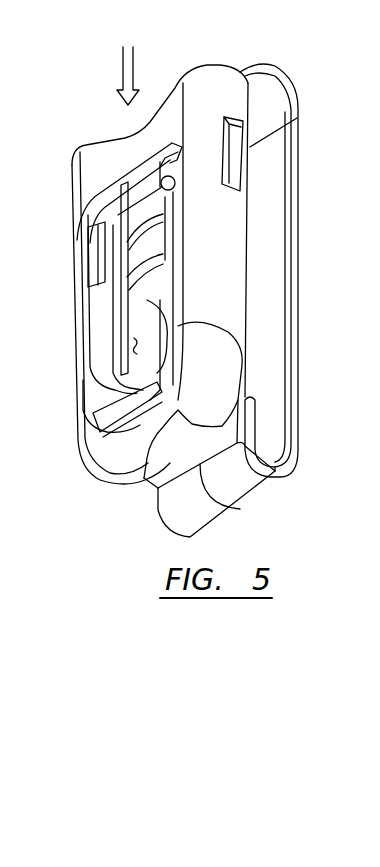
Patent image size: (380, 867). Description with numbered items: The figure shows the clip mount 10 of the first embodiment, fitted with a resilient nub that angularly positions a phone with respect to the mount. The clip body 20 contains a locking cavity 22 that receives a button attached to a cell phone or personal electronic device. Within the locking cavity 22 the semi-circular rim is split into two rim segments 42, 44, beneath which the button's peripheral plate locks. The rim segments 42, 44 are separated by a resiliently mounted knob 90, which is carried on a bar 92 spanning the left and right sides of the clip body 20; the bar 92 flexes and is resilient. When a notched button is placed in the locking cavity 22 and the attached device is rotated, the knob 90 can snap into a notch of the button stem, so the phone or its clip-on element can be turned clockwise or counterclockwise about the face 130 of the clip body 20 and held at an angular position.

The clip mount 10 is at (310, 302).
The rim segment 42 is at (150, 314).
The face 130 is at (92, 160).
The clip body 20 is at (78, 292).
The locking cavity 22 is at (128, 338).
The rim segment 44 is at (118, 380).
The knob 90 is at (92, 411).
The bar 92 is at (105, 465).